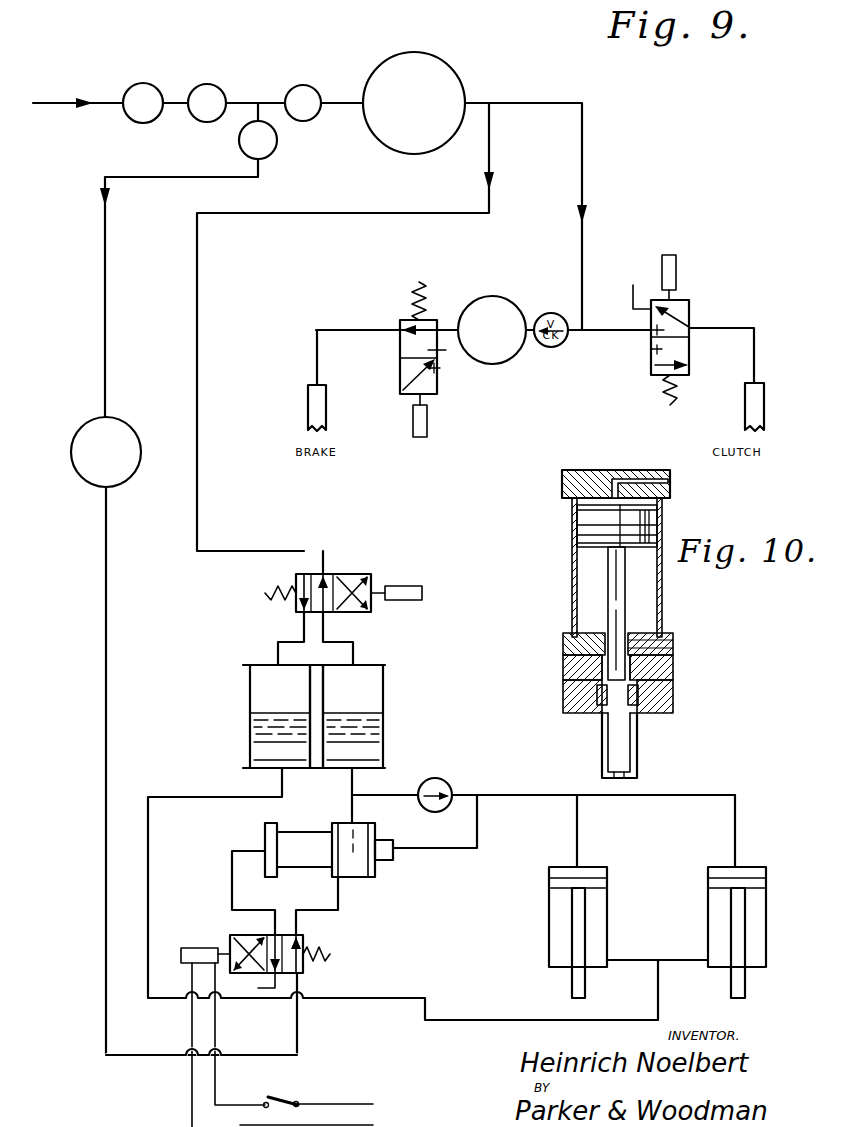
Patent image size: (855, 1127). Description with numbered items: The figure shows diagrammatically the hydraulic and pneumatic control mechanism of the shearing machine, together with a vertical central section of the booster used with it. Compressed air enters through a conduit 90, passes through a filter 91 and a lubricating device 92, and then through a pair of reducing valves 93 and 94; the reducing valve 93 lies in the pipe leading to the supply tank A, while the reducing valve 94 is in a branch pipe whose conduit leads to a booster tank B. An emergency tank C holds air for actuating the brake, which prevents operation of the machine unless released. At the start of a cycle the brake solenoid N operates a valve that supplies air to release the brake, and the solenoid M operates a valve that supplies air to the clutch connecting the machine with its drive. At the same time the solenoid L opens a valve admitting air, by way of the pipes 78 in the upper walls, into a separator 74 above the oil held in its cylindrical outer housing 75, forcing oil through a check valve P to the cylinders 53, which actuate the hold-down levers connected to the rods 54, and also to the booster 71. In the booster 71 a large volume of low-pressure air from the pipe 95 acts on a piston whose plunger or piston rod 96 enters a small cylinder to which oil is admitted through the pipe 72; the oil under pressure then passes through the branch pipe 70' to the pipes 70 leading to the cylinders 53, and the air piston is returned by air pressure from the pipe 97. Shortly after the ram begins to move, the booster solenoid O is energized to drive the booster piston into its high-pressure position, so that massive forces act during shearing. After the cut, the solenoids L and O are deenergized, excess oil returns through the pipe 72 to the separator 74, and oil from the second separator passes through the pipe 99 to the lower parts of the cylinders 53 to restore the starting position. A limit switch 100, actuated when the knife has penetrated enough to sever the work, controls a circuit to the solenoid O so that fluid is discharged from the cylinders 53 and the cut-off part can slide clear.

In FIG. 9, the conduit 90 is at (120, 97).
In FIG. 9, the filter 91 is at (134, 121).
In FIG. 9, the lubricating device 92 is at (213, 86).
In FIG. 9, the reducing valve 93 is at (309, 86).
In FIG. 9, the reducing valve 94 is at (278, 152).
In FIG. 9, the supply tank A is at (434, 50).
In FIG. 9, the booster tank B is at (84, 430).
In FIG. 9, the emergency tank C is at (502, 296).
In FIG. 9, the solenoid M is at (666, 253).
In FIG. 9, the brake solenoid N is at (430, 412).
In FIG. 9, the solenoid L is at (407, 586).
In FIG. 9, the booster solenoid O is at (190, 948).
In FIG. 9, the check valve P is at (446, 780).
In FIG. 9, the pipes 78 is at (302, 629).
In FIG. 9, the separator 74 is at (240, 683).
In FIG. 9, the outer housing 75 is at (250, 724).
In FIG. 9, the pipe 72 is at (350, 790).
In FIG. 10, the pipe 72 is at (563, 672).
In FIG. 9, the pipe 97 is at (108, 678).
In FIG. 10, the pipe 97 is at (674, 645).
In FIG. 9, the pipe 99 is at (176, 796).
In FIG. 9, the pipe 95 is at (240, 852).
In FIG. 10, the pipe 95 is at (672, 478).
In FIG. 9, the booster 71 is at (352, 880).
In FIG. 10, the booster 71 is at (664, 600).
In FIG. 9, the branch pipe 70' is at (426, 836).
In FIG. 10, the branch pipe 70' is at (651, 748).
In FIG. 9, the pipes 70 is at (656, 831).
In FIG. 9, the cylinders 53 is at (549, 905).
In FIG. 9, the rods 54 is at (572, 988).
In FIG. 10, the piston rod 96 is at (608, 573).
In FIG. 9, the limit switch 100 is at (282, 1096).